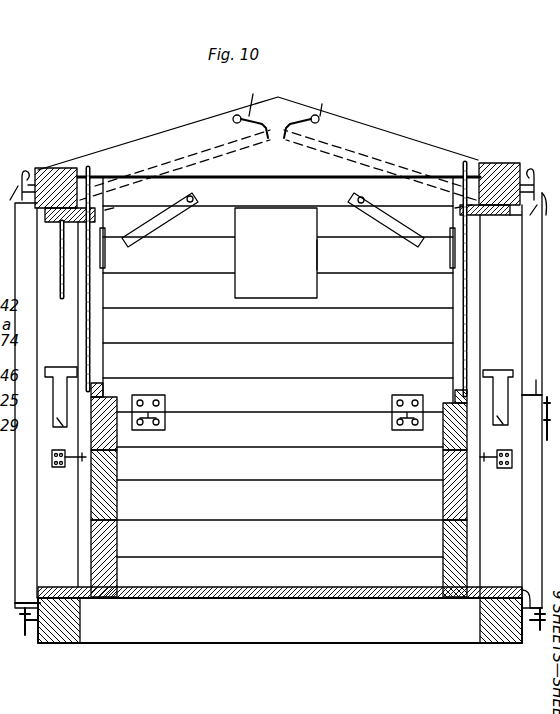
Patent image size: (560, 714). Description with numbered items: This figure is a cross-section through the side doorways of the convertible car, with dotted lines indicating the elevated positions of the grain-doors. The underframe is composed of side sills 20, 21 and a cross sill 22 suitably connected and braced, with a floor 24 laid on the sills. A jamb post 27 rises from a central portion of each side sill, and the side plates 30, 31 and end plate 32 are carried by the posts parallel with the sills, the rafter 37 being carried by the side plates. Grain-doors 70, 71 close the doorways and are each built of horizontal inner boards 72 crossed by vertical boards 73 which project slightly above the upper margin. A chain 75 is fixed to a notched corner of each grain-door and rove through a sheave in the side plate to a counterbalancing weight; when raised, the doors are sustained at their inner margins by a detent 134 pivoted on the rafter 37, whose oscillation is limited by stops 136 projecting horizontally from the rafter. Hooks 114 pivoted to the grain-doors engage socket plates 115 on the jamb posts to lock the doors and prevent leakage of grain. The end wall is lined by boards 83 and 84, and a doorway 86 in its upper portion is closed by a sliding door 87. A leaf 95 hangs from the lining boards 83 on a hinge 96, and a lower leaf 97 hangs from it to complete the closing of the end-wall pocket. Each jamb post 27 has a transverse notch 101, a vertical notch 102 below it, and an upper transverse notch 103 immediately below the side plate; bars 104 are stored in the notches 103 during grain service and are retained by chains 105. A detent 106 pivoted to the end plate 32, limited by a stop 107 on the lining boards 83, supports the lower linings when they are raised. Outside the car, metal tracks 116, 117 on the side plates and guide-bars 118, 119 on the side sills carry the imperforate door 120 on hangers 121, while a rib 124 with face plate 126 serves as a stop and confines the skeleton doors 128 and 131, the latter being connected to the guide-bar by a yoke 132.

The side sill 20 is at (82, 627).
The side sill 21 is at (478, 627).
The cross sill 22 is at (280, 620).
The floor 24 is at (280, 582).
The jamb post 27 is at (278, 387).
The side plate 30 is at (48, 172).
The side plate 31 is at (500, 168).
The end plate 32 is at (279, 188).
The rafter 37 is at (327, 101).
The grain-door 70 is at (118, 537).
The grain-door 71 is at (442, 537).
The inner boards 72 is at (118, 466).
The vertical boards 73 is at (104, 497).
The chain 75 is at (95, 330).
The lining boards 83 is at (278, 306).
The lining boards 84 is at (280, 518).
The doorway 86 is at (318, 252).
The sliding door 87 is at (276, 253).
The leaf 95 is at (280, 426).
The hinge 96 is at (166, 403).
The leaf 97 is at (280, 461).
The transverse notch 101 is at (60, 372).
The vertical notch 102 is at (281, 433).
The transverse notch 103 is at (52, 222).
The bar 104 is at (100, 210).
The chain 105 is at (62, 268).
The detent 106 is at (160, 214).
The stop 107 is at (425, 246).
The hook 114 is at (78, 462).
The socket plate 115 is at (66, 468).
The metal track 116 is at (26, 160).
The metal track 117 is at (535, 172).
The metal guide-bar 118 is at (25, 622).
The metal guide-bar 119 is at (540, 632).
The imperforate door 120 is at (32, 535).
The hanger 121 is at (278, 196).
The rib 124 is at (537, 385).
The face plate 126 is at (545, 405).
The skeleton door 128 is at (537, 400).
The skeleton door 131 is at (537, 449).
The yoke 132 is at (522, 588).
The detent 134 is at (297, 107).
The stop 136 is at (238, 130).